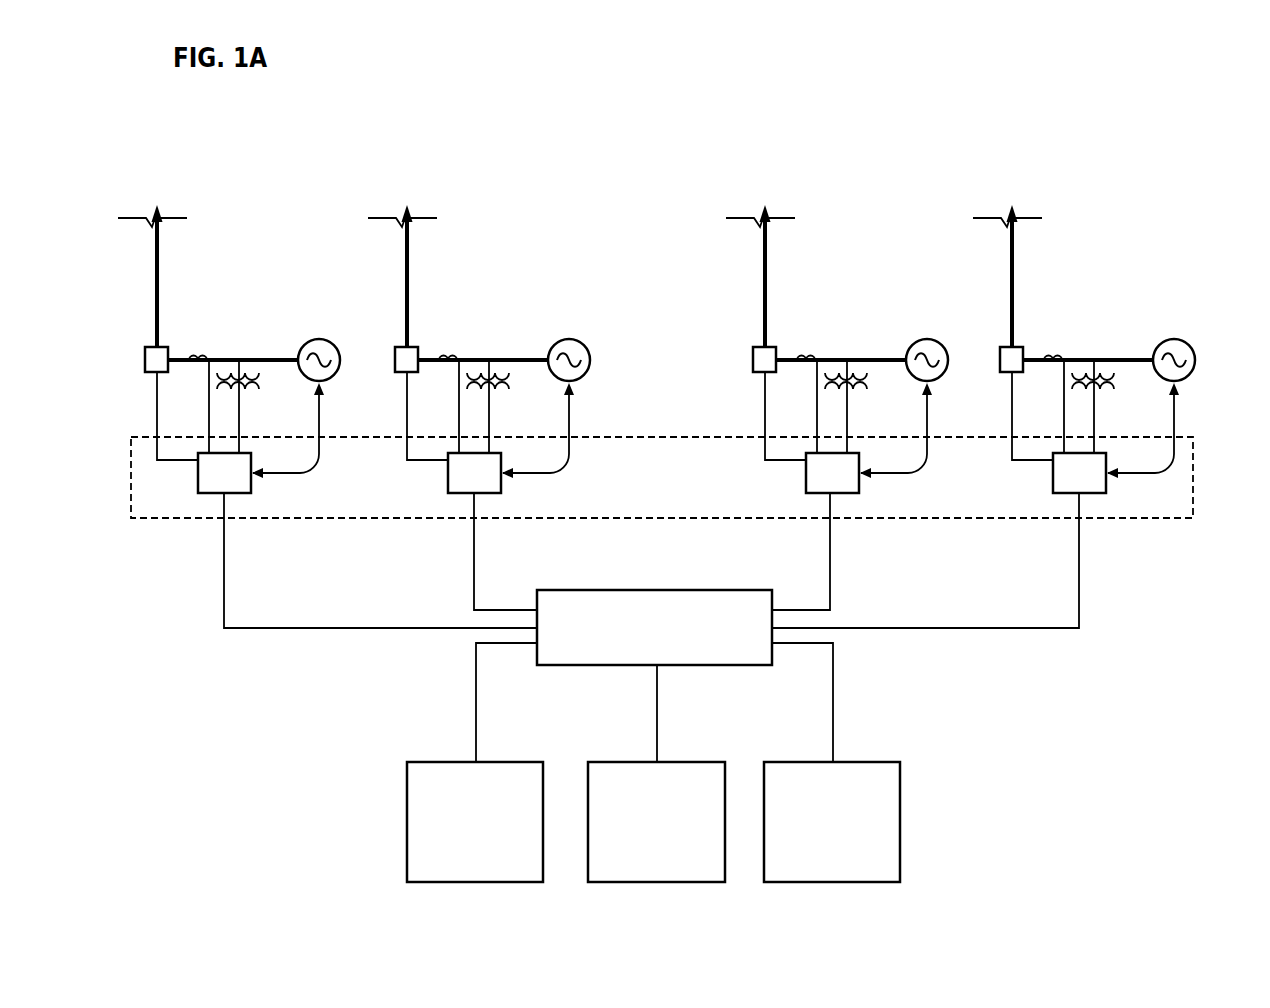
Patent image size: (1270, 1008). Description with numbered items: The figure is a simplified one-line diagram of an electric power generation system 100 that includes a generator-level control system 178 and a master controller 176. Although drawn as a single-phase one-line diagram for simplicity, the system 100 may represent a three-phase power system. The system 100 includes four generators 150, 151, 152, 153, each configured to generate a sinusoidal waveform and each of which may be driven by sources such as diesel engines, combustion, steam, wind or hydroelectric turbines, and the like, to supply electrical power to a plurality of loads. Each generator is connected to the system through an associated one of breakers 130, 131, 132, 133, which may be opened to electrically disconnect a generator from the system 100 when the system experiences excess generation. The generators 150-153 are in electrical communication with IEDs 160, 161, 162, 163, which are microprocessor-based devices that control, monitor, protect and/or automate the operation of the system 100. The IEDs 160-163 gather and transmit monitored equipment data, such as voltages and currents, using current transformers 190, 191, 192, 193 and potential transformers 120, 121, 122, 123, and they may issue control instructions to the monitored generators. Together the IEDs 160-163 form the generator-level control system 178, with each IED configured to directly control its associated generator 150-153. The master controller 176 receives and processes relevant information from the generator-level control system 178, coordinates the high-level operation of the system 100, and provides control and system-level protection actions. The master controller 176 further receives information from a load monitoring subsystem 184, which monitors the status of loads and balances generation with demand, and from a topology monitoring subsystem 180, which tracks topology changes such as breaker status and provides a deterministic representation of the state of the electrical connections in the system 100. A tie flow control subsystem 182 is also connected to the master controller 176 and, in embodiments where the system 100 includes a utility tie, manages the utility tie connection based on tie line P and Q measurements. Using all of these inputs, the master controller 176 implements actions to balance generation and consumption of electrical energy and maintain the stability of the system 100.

The electric power generation system 100 is at (163, 182).
The potential transformer 120 is at (263, 381).
The potential transformer 121 is at (508, 406).
The potential transformer 122 is at (866, 406).
The potential transformer 123 is at (1113, 406).
The breaker 130 is at (170, 374).
The breaker 131 is at (422, 403).
The breaker 132 is at (780, 403).
The breaker 133 is at (1027, 403).
The generator 150 is at (305, 343).
The generator 151 is at (546, 389).
The generator 152 is at (904, 389).
The generator 153 is at (1151, 389).
The IED 160 is at (198, 470).
The IED 161 is at (455, 486).
The IED 162 is at (813, 486).
The IED 163 is at (1060, 486).
The master controller 176 is at (639, 652).
The generator-level control system 178 is at (1193, 478).
The topology monitoring subsystem 180 is at (672, 871).
The tie flow control subsystem 182 is at (817, 871).
The load monitoring subsystem 184 is at (460, 871).
The current transformer 190 is at (208, 357).
The current transformer 191 is at (469, 385).
The current transformer 192 is at (827, 385).
The current transformer 193 is at (1074, 385).